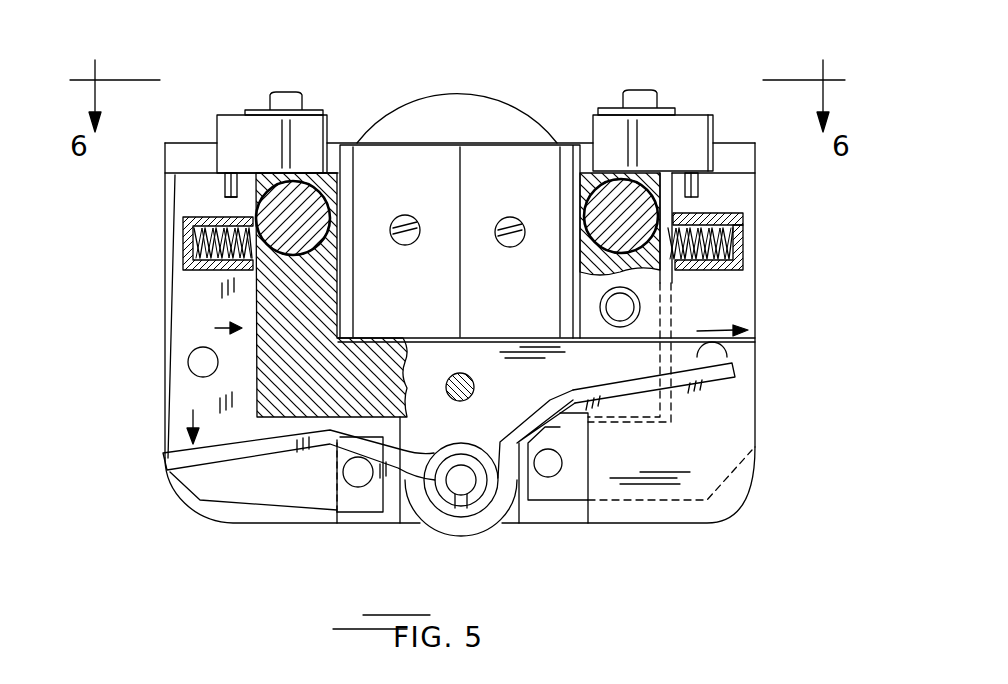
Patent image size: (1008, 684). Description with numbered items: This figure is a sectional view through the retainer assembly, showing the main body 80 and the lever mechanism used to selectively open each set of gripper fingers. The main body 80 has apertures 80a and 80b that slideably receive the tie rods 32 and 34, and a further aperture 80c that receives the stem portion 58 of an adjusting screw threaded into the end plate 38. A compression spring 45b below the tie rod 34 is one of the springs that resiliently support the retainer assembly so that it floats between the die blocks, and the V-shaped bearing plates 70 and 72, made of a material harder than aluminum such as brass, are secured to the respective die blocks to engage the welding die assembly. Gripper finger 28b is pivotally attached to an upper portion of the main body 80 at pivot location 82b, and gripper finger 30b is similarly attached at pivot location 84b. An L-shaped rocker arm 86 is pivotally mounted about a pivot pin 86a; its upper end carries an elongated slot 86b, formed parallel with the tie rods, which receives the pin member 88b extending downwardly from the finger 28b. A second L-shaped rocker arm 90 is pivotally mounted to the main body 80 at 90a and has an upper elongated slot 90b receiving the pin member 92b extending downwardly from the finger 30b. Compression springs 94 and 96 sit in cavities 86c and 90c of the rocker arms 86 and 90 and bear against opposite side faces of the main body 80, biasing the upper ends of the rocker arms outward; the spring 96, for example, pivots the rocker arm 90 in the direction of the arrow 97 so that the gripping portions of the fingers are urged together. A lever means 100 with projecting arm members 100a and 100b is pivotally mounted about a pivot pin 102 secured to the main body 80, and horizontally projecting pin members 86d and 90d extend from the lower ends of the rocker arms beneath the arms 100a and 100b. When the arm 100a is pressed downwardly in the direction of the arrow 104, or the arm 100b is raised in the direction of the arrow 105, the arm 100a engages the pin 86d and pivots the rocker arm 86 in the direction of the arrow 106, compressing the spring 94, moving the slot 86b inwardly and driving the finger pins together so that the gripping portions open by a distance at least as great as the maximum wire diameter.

The gripper finger 28b is at (238, 128).
The pivot location 82b is at (287, 92).
The end plate 38 is at (454, 95).
The tie rod 34 is at (600, 192).
The V-shaped bearing plate 70 is at (528, 158).
The tie rod 32 is at (300, 190).
The gripper finger 30b is at (686, 135).
The pivot location 84b is at (638, 100).
The pin member 88b is at (225, 183).
The elongated slot 86b is at (230, 199).
The compression spring 94 is at (198, 240).
The cavity 86c is at (192, 267).
The direction arrow 106 is at (215, 328).
The pivot pin 86a is at (190, 364).
The L-shaped rocker arm 86 is at (168, 410).
The direction arrow 104 is at (193, 423).
The lever arm member 100a is at (175, 478).
The horizontally projecting pin member 86d is at (358, 482).
The lever means 100 is at (424, 522).
The pivot pin 102 is at (461, 488).
The main body 80 is at (501, 520).
The horizontally projecting pin member 90d is at (548, 472).
The lever arm member 100b is at (692, 390).
The direction arrow 105 is at (707, 398).
The L-shaped rocker arm 90 is at (755, 422).
The pivot location 90a is at (740, 382).
The direction arrow 97 is at (733, 350).
The compression spring 45b is at (638, 303).
The cavity 90c is at (742, 268).
The compression spring 96 is at (742, 242).
The elongated slot 90b is at (703, 188).
The pin member 92b is at (700, 180).
The aperture 80a is at (340, 203).
The V-shaped bearing plate 72 is at (497, 222).
The aperture 80b is at (580, 233).
The aperture 80c is at (474, 387).
The stem portion 58 is at (410, 398).